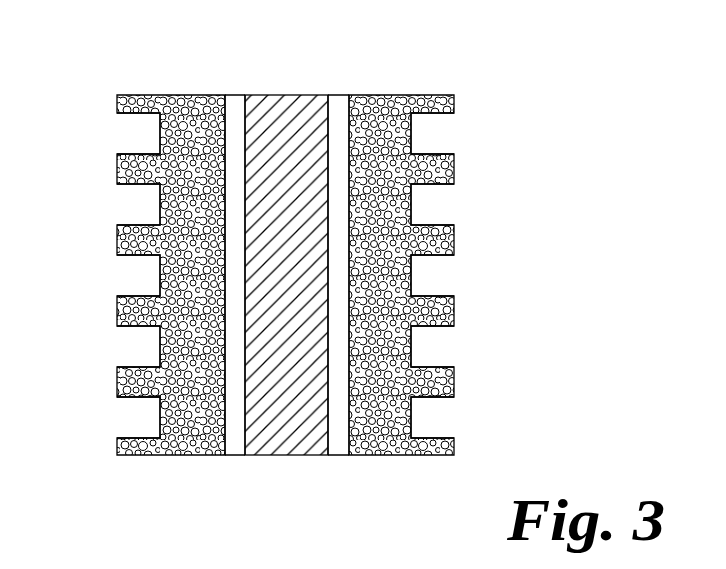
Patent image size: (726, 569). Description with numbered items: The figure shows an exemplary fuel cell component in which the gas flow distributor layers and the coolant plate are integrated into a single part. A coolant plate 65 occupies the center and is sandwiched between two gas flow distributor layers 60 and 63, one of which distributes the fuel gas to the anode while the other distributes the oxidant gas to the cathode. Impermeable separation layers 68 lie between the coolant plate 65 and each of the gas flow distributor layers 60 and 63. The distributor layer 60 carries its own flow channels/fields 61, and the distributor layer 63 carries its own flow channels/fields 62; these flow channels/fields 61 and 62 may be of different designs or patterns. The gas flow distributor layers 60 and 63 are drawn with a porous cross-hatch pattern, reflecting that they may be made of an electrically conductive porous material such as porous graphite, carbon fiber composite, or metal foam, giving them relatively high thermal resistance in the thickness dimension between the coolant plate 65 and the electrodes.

The gas flow distributor layer 60 is at (182, 95).
The flow channels/fields 61 is at (133, 200).
The flow channels/fields 62 is at (440, 200).
The gas flow distributor layer 63 is at (388, 95).
The coolant plate 65 is at (282, 95).
The impermeable separation layers 68 is at (337, 455).